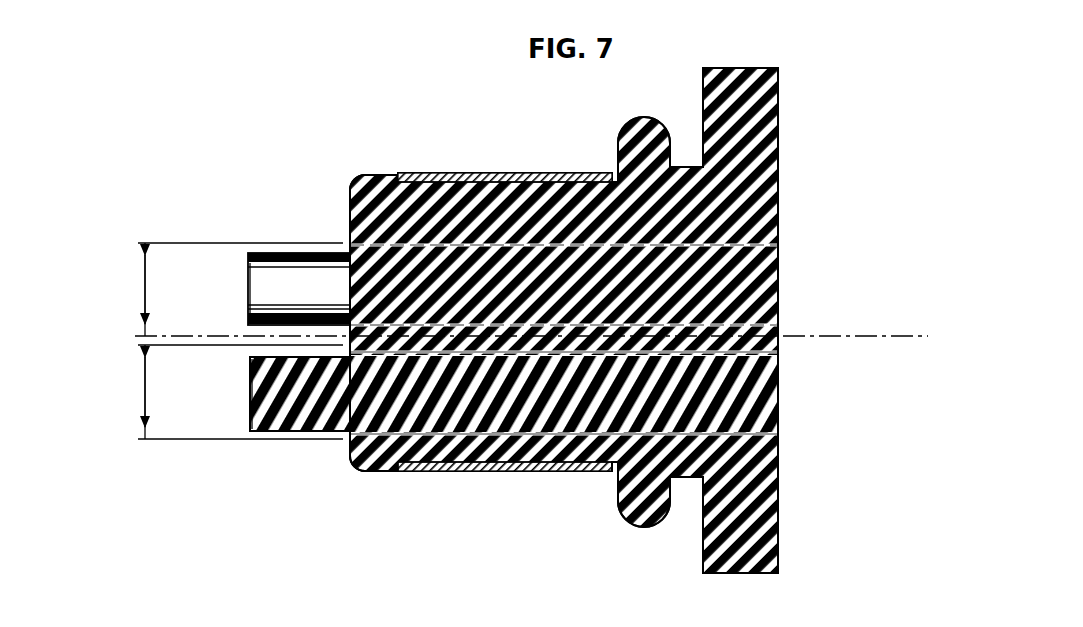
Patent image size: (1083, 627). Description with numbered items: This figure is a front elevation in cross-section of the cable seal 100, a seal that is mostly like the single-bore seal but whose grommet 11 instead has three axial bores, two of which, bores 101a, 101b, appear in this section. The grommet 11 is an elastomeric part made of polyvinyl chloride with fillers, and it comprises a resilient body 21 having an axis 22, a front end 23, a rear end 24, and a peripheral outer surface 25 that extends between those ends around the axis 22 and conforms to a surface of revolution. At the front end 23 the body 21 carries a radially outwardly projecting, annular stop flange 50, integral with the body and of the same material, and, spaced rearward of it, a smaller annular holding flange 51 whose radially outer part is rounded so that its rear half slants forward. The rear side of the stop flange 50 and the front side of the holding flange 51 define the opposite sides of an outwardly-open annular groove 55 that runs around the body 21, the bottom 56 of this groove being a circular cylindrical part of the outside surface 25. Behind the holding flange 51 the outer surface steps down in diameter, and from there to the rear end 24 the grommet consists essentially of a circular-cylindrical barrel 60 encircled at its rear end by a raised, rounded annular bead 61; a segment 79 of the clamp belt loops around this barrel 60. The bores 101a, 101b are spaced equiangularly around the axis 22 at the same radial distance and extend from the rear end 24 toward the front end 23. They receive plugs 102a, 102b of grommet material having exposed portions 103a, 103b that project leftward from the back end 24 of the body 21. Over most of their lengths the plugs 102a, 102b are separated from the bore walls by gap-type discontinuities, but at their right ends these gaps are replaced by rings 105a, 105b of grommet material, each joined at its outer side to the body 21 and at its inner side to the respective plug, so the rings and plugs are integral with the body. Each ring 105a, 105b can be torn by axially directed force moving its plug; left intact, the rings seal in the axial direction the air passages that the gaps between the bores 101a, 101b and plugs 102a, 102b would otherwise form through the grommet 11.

The grommet 11 is at (350, 230).
The resilient body 21 is at (735, 280).
The axis 22 is at (898, 340).
The front end 23 is at (778, 202).
The rear end 24 is at (350, 195).
The peripheral outer surface 25 is at (393, 471).
The stop flange 50 is at (758, 80).
The holding flange 51 is at (635, 128).
The groove 55 is at (688, 165).
The bottom 56 is at (690, 480).
The barrel 60 is at (470, 173).
The bead 61 is at (368, 175).
The belt segment 79 is at (425, 173).
The cable seal 100 is at (390, 562).
The axial bore 101a is at (143, 400).
The axial bore 101b is at (143, 290).
The plug 102a is at (252, 383).
The plug 102b is at (250, 275).
The exposed portion 103a is at (252, 408).
The exposed portion 103b is at (250, 305).
The ring 105a is at (778, 352).
The ring 105b is at (778, 245).